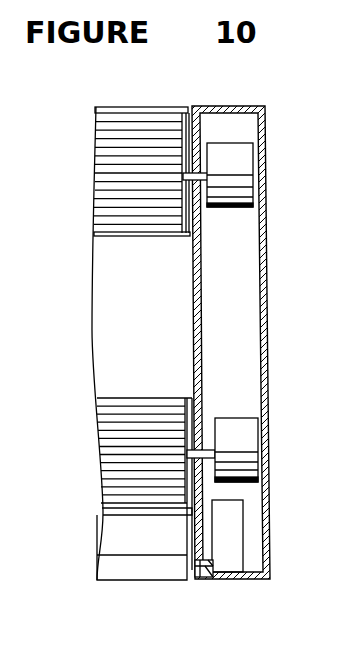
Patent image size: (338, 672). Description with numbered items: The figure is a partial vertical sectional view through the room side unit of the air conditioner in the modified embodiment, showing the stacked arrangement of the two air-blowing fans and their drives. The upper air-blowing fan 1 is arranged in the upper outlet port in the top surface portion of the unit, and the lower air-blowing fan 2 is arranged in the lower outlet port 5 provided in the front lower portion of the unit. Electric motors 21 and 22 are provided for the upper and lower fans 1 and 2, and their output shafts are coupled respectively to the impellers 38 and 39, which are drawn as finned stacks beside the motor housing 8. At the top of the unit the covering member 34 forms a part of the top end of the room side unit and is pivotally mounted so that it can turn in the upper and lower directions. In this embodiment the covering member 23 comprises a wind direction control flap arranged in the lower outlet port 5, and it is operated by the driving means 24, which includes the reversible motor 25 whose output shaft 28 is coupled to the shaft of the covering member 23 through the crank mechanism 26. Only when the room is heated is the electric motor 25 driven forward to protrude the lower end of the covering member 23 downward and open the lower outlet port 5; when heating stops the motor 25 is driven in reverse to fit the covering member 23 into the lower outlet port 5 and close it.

The upper air-blowing fan 1 is at (127, 242).
The lower air-blowing fan 2 is at (125, 394).
The lower outlet port 5 is at (140, 573).
The housing 8 is at (333, 283).
The electric motor 21 is at (230, 165).
The electric motor 22 is at (240, 438).
The covering member 23 is at (120, 540).
The driving means 24 is at (250, 529).
The reversible motor 25 is at (222, 548).
The crank mechanism 26 is at (189, 579).
The output shaft 28 is at (218, 579).
The covering member 34 is at (110, 107).
The impeller 38 is at (158, 125).
The impeller 39 is at (120, 453).